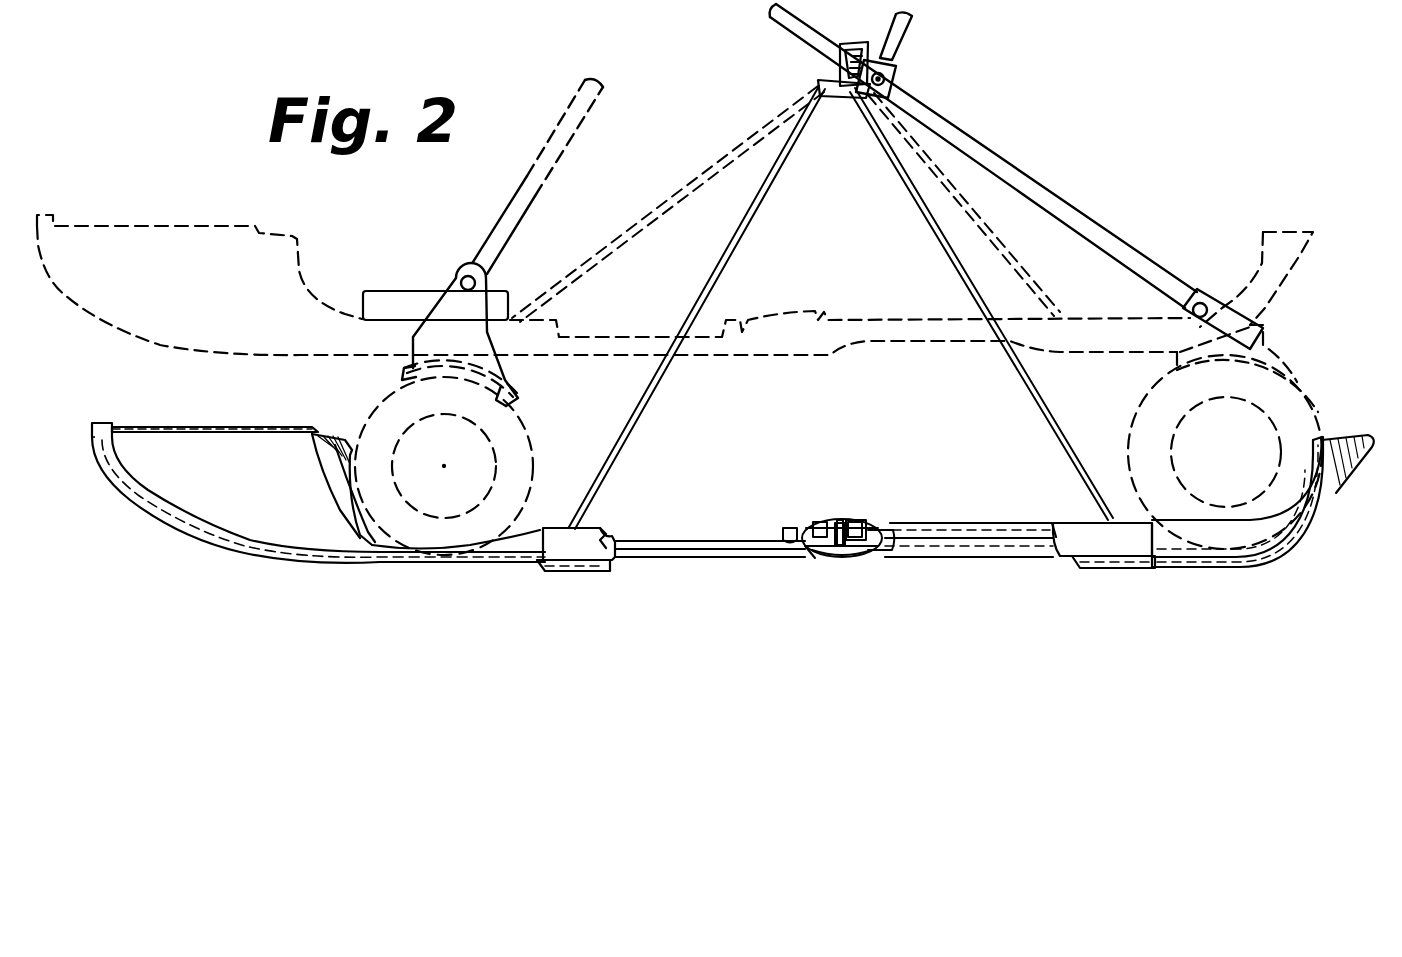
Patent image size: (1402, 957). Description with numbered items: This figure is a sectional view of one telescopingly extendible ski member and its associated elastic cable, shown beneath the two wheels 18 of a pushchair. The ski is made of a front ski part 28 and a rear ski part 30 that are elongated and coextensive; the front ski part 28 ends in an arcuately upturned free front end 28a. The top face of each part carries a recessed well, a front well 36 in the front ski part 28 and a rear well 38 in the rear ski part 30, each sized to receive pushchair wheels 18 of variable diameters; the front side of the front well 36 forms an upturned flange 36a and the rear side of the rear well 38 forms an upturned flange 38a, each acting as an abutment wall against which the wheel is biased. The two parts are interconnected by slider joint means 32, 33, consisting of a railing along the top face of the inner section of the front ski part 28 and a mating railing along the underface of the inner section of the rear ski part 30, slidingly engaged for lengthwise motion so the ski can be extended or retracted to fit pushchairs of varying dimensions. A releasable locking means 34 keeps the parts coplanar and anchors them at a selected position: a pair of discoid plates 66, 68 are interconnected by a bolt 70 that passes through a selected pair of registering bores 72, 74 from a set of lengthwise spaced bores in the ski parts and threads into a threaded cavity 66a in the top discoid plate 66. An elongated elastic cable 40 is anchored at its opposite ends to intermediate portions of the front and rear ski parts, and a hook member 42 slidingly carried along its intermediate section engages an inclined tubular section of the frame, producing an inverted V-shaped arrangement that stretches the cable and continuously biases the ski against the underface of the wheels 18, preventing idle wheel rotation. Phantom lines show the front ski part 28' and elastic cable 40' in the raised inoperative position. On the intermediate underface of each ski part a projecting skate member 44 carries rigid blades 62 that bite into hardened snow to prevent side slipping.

The pushchair wheel 18 is at (516, 456).
The front ski part 28 is at (318, 516).
The front ski part in inoperative position 28' is at (677, 296).
The upturned free front end 28a is at (94, 440).
The rear ski part 30 is at (1166, 556).
The slider joint means 32 is at (708, 560).
The slider joint means 33 is at (990, 545).
The releasable locking means 34 is at (825, 504).
The front well 36 is at (480, 548).
The upturned flange 36a is at (335, 458).
The rear well 38 is at (1228, 552).
The upturned flange 38a is at (1334, 492).
The elastic cable 40 is at (841, 307).
The elastic cable in inoperative position 40' is at (786, 204).
The hook member 42 is at (814, 70).
The skate member 44 is at (596, 586).
The blades 62 is at (575, 572).
The top discoid plate 66 is at (862, 520).
The threaded cavity 66a is at (842, 524).
The discoid plate 68 is at (878, 550).
The bolt 70 is at (842, 552).
The registering bore 72 is at (796, 524).
The registering bore 74 is at (812, 553).